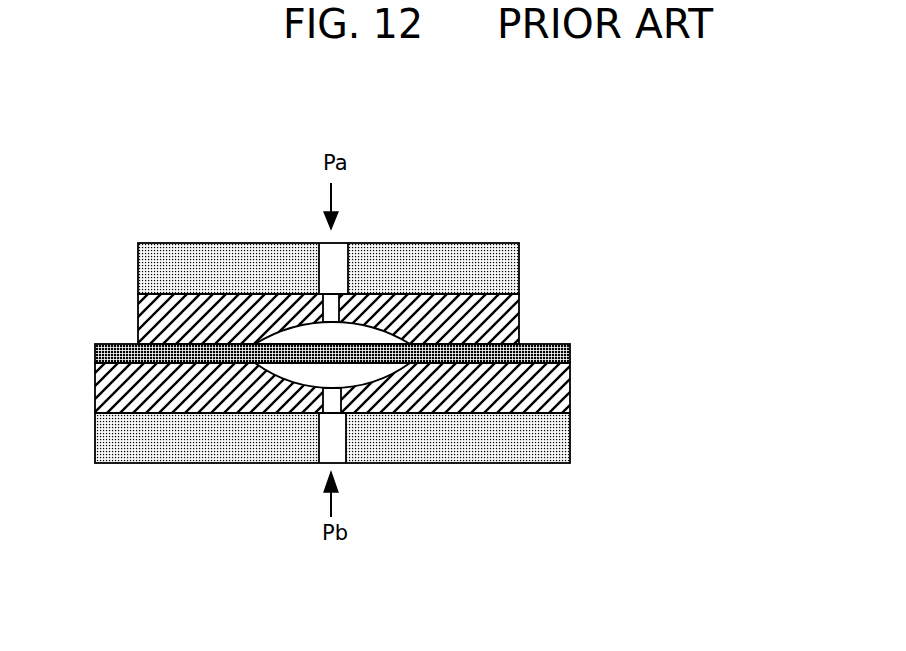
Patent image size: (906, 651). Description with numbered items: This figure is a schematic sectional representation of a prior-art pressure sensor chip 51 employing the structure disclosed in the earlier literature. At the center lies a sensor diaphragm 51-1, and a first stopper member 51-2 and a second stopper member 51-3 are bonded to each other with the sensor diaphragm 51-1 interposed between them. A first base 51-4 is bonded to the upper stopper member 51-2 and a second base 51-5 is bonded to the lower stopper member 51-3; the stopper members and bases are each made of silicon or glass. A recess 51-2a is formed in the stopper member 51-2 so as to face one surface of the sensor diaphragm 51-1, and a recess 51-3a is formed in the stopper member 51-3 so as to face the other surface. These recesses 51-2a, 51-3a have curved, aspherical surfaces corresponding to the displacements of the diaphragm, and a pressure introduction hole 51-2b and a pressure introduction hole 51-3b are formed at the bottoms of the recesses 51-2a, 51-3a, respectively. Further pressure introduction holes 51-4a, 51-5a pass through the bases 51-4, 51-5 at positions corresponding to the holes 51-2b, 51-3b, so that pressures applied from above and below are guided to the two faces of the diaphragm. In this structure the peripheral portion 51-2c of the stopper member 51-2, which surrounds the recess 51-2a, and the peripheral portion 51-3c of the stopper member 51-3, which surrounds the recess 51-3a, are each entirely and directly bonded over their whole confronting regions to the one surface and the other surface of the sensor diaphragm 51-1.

The pressure sensor chip 51 is at (765, 217).
The sensor diaphragm 51-1 is at (565, 352).
The first stopper member 51-2 is at (505, 317).
The recess 51-2a is at (373, 332).
The pressure introduction hole 51-2b is at (331, 300).
The peripheral portion 51-2c is at (188, 344).
The second stopper member 51-3 is at (565, 386).
The recess 51-3a is at (372, 378).
The pressure introduction hole 51-3b is at (325, 402).
The peripheral portion 51-3c is at (195, 364).
The first base 51-4 is at (495, 262).
The pressure introduction hole 51-4a is at (330, 269).
The second base 51-5 is at (558, 442).
The pressure introduction hole 51-5a is at (328, 442).